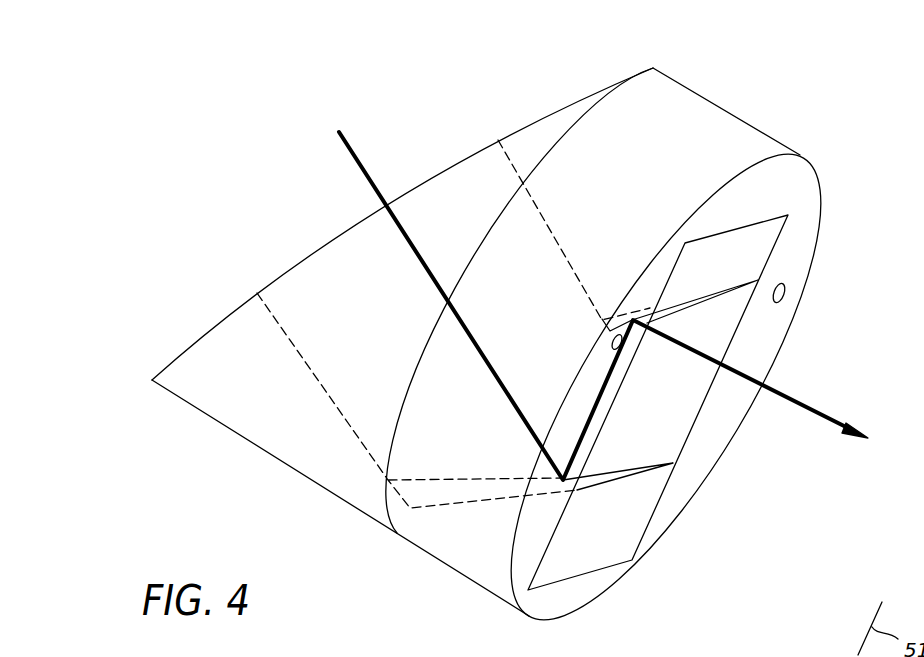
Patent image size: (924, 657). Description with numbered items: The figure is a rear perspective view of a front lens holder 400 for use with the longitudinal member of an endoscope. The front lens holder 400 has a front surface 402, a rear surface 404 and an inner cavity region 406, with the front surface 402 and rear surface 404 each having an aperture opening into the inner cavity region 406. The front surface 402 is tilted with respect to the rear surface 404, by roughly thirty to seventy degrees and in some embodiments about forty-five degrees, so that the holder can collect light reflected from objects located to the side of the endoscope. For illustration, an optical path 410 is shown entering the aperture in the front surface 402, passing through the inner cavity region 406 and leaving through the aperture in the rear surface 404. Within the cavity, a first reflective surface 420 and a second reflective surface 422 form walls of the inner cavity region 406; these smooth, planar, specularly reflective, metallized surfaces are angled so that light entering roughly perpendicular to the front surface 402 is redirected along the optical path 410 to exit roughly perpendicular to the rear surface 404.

The front lens holder 400 is at (245, 127).
The front surface 402 is at (200, 333).
The rear surface 404 is at (697, 460).
The inner cavity region 406 is at (320, 270).
The optical path 410 is at (367, 172).
The first reflective surface 420 is at (453, 490).
The second reflective surface 422 is at (619, 310).